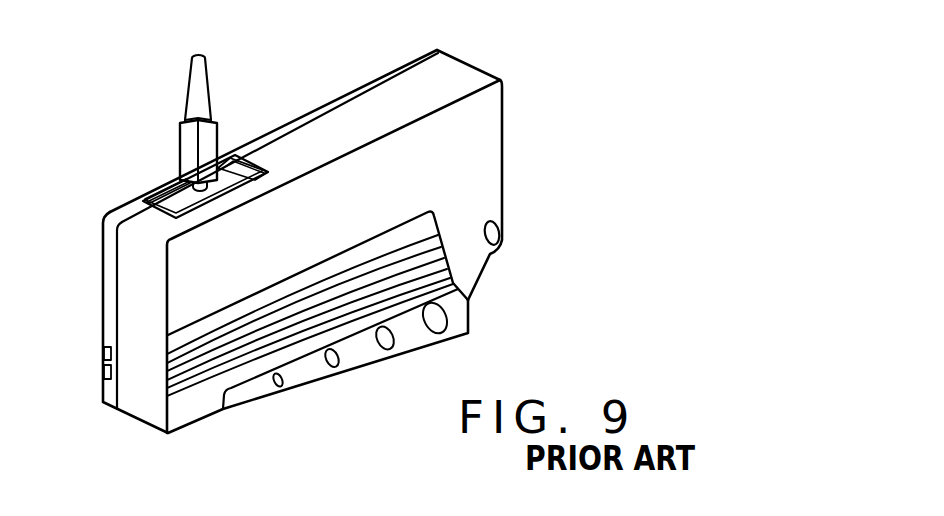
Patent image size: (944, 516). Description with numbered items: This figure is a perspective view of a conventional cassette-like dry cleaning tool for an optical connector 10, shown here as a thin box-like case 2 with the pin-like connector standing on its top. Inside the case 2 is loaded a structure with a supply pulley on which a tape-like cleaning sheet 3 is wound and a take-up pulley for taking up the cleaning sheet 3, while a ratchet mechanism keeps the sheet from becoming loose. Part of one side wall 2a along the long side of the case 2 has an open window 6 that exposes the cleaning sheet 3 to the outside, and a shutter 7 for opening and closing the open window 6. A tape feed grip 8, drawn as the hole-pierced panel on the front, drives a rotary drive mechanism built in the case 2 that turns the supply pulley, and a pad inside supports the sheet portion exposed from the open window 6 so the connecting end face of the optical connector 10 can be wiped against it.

The case 2 is at (130, 302).
The side wall 2a is at (470, 77).
The cleaning sheet 3 is at (174, 186).
The open window 6 is at (143, 194).
The shutter 7 is at (230, 162).
The tape feed grip 8 is at (362, 358).
The optical connector 10 is at (180, 138).